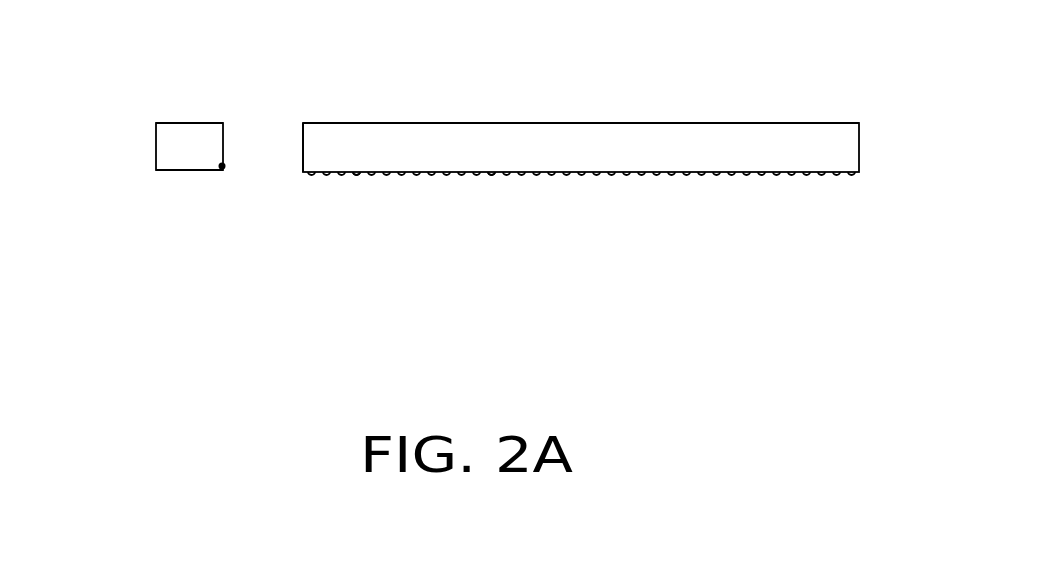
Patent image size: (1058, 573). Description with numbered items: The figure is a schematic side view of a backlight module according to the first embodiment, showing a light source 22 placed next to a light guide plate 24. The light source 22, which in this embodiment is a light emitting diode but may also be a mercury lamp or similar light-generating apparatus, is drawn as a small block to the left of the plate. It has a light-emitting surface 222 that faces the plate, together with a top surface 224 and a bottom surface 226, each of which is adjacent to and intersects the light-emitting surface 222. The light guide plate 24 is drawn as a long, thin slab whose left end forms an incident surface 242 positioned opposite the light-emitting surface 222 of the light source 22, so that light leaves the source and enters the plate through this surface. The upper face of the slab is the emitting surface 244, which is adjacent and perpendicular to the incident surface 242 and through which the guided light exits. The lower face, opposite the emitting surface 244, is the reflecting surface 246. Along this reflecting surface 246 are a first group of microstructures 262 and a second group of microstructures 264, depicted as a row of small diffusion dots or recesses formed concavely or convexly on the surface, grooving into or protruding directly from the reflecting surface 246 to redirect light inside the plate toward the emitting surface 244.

The light source 22 is at (182, 137).
The light-emitting surface 222 is at (225, 163).
The top surface 224 is at (168, 123).
The bottom surface 226 is at (167, 172).
The light guide plate 24 is at (833, 148).
The incident surface 242 is at (303, 140).
The emitting surface 244 is at (452, 122).
The reflecting surface 246 is at (572, 174).
The first group of microstructures 262 is at (353, 174).
The second group of microstructures 264 is at (485, 174).